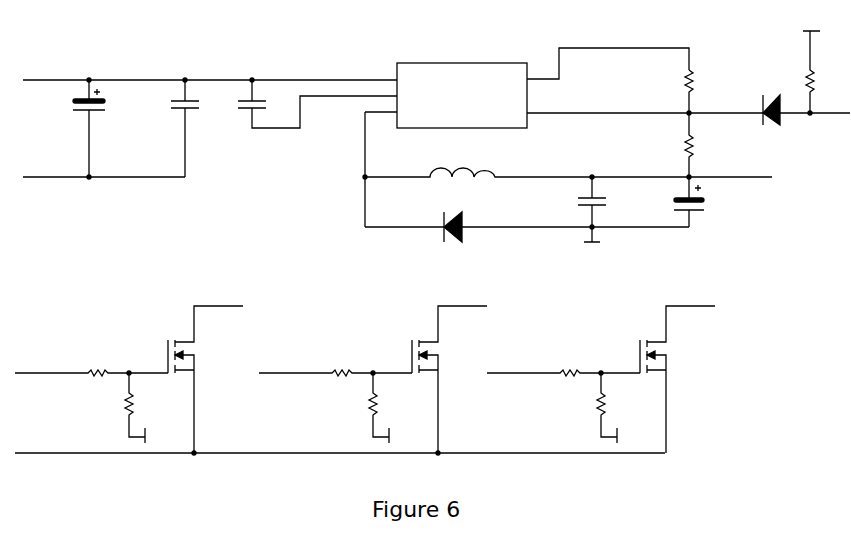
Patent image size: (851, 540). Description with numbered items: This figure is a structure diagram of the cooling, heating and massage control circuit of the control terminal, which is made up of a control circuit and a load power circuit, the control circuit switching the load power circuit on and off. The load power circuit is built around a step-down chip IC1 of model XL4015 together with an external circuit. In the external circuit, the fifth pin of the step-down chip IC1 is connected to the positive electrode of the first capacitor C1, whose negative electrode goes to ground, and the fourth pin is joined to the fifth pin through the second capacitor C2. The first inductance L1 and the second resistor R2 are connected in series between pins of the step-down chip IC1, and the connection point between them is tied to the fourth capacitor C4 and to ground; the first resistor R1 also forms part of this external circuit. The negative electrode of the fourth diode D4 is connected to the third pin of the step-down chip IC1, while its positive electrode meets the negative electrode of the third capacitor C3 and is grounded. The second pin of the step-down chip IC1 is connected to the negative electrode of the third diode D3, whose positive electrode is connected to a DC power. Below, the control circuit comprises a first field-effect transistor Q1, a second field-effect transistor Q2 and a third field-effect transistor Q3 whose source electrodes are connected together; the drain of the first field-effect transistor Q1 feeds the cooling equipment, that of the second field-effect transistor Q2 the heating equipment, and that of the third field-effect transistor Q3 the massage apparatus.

The first capacitor C1 is at (76, 128).
The second capacitor C2 is at (317, 104).
The third capacitor C3 is at (699, 202).
The fourth capacitor C4 is at (603, 209).
The third diode D3 is at (769, 101).
The fourth diode D4 is at (527, 218).
The first resistor R1 is at (676, 91).
The second resistor R2 is at (700, 145).
The first inductance L1 is at (568, 163).
The step-down chip IC1 is at (461, 95).
The first field-effect transistor Q1 is at (129, 379).
The second field-effect transistor Q2 is at (373, 379).
The third field-effect transistor Q3 is at (601, 379).